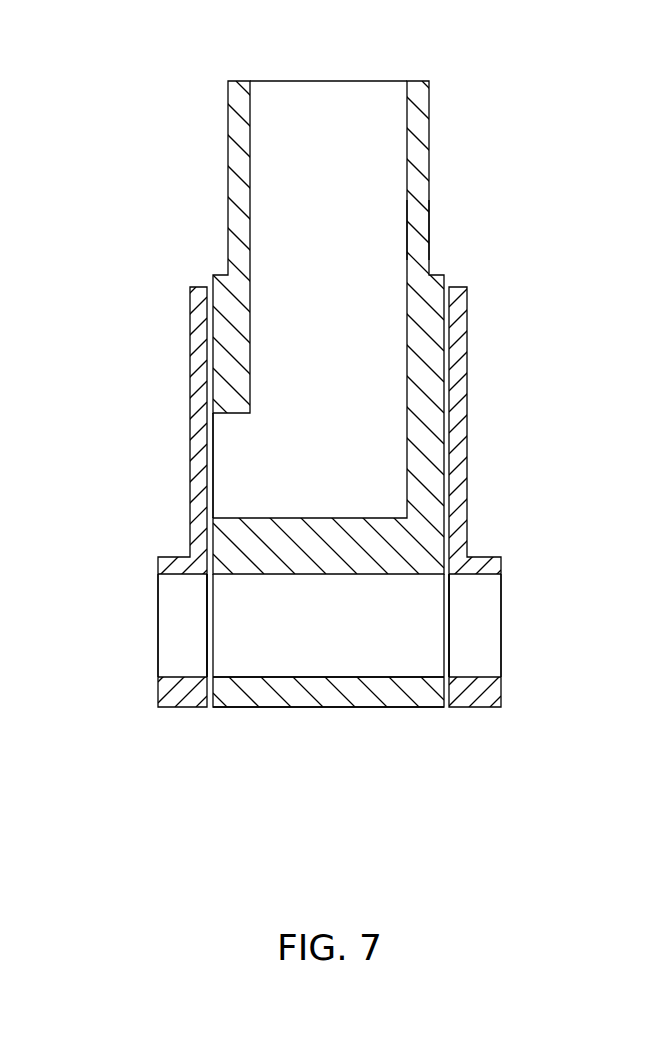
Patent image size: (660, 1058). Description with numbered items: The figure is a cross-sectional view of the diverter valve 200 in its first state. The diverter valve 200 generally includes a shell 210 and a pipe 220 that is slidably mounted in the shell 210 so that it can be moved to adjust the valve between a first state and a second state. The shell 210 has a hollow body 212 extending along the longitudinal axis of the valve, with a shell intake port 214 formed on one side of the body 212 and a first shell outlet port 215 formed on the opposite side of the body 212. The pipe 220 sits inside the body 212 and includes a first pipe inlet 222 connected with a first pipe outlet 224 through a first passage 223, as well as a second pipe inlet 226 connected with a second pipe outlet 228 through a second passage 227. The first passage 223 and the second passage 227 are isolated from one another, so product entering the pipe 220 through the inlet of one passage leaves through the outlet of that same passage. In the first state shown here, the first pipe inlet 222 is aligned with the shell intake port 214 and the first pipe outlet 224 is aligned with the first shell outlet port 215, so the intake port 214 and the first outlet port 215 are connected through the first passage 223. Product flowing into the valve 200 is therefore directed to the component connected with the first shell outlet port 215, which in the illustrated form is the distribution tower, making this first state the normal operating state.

The diverter valve 200 is at (153, 102).
The shell 210 is at (156, 389).
The hollow body 212 is at (190, 424).
The shell intake port 214 is at (141, 637).
The first shell outlet port 215 is at (515, 637).
The pipe 220 is at (429, 146).
The first pipe inlet 222 is at (196, 658).
The first passage 223 is at (334, 664).
The first pipe outlet 224 is at (456, 658).
The second pipe inlet 226 is at (228, 497).
The second passage 227 is at (392, 234).
The second pipe outlet 228 is at (374, 97).